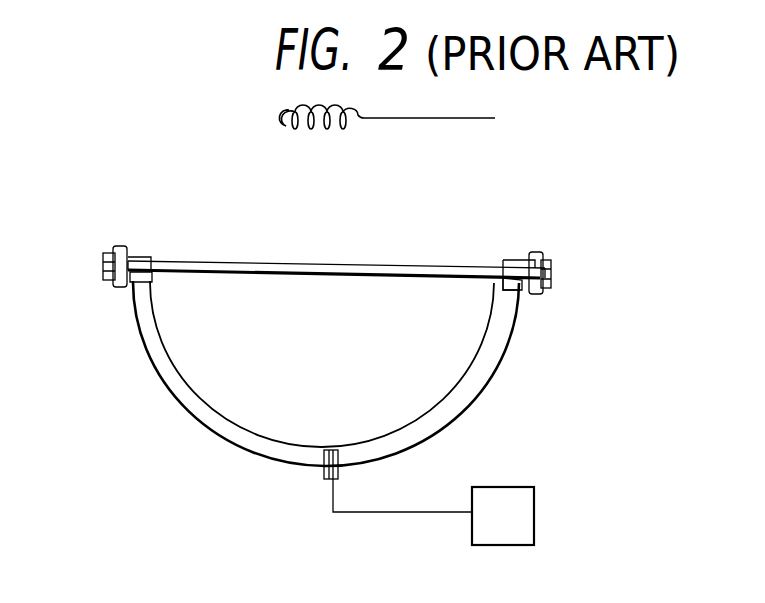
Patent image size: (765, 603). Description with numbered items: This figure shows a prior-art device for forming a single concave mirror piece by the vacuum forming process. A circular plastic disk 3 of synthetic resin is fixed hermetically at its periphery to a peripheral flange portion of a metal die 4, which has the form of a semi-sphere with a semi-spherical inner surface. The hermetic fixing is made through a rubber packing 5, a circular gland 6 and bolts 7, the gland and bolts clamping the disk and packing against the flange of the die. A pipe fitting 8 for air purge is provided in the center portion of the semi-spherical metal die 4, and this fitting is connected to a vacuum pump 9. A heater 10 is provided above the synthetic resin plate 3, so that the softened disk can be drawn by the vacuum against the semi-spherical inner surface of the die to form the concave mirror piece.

The circular plastic disk 3 is at (460, 258).
The metal die 4 is at (497, 368).
The rubber packing 5 is at (150, 280).
The circular gland 6 is at (144, 252).
The bolts 7 is at (119, 246).
The pipe fitting 8 is at (322, 477).
The vacuum pump 9 is at (534, 512).
The heater 10 is at (328, 126).